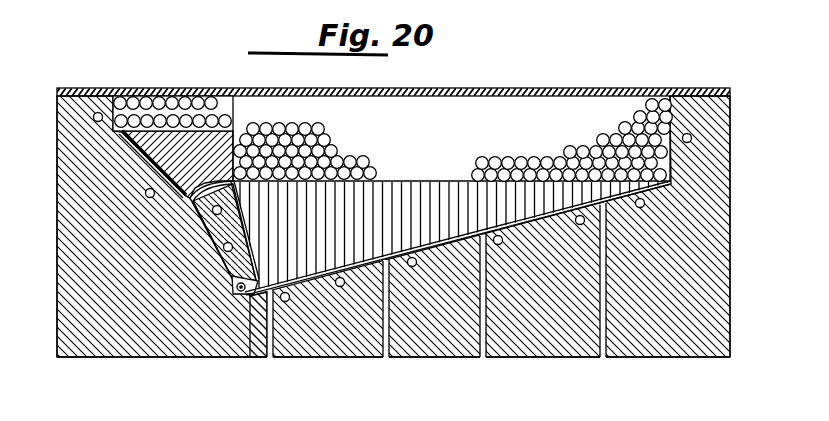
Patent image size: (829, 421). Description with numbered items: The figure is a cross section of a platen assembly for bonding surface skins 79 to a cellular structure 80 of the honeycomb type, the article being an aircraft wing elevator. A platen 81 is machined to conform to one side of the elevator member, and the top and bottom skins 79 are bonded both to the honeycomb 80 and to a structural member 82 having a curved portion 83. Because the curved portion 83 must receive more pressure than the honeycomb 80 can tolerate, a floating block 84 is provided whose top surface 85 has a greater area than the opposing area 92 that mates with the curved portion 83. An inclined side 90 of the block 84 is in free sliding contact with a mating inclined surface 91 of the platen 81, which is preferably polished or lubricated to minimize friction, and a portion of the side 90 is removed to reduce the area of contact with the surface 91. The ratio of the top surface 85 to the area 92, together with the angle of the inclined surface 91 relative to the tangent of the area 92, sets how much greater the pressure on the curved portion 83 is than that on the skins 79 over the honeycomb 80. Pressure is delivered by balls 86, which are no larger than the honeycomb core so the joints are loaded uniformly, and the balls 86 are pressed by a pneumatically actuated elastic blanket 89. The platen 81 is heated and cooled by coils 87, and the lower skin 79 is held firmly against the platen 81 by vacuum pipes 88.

The surface skin 79 is at (433, 180).
The cellular structure 80 is at (320, 273).
The platen 81 is at (135, 328).
The structural member 82 is at (232, 218).
The curved portion 83 is at (200, 198).
The floating block 84 is at (172, 150).
The top surface 85 is at (206, 125).
The balls 86 is at (317, 130).
The coils 87 is at (146, 197).
The vacuum pipes 88 is at (268, 332).
The elastic blanket 89 is at (555, 90).
The inclined side 90 is at (121, 140).
The inclined surface 91 is at (165, 168).
The opposing area 92 is at (186, 157).